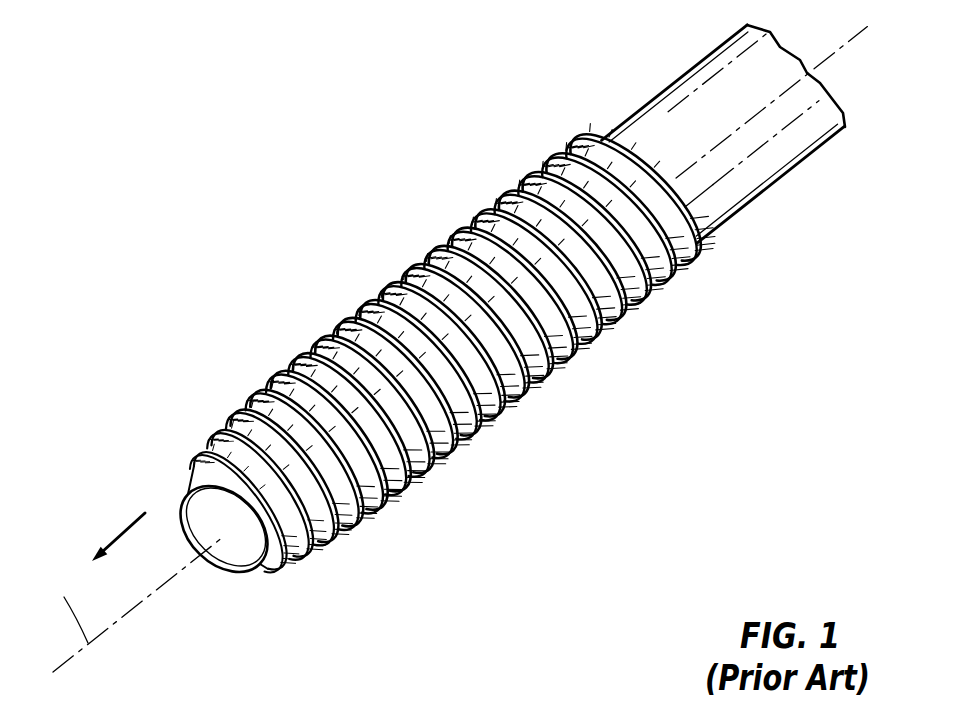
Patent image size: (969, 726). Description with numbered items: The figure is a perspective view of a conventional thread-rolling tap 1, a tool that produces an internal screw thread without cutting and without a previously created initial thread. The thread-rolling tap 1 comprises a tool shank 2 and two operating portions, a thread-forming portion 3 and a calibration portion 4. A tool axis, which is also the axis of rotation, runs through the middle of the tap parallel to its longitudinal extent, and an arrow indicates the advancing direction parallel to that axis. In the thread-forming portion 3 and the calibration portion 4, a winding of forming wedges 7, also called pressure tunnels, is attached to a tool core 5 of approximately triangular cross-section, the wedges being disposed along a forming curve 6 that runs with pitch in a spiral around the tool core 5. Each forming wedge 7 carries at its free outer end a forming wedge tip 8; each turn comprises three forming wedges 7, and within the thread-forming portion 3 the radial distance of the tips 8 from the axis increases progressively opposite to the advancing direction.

The thread-rolling tap 1 is at (248, 265).
The tool shank 2 is at (757, 163).
The thread-forming portion 3 is at (428, 554).
The calibration portion 4 is at (720, 277).
The tool core 5 is at (277, 564).
The forming curve 6 is at (322, 553).
The forming wedges 7 is at (240, 420).
The forming wedge tip 8 is at (210, 437).